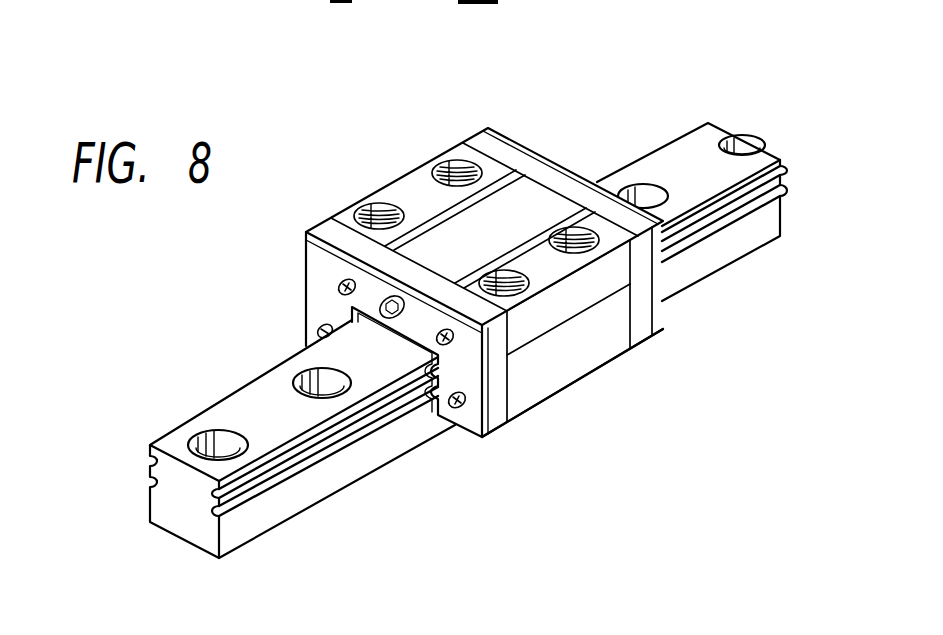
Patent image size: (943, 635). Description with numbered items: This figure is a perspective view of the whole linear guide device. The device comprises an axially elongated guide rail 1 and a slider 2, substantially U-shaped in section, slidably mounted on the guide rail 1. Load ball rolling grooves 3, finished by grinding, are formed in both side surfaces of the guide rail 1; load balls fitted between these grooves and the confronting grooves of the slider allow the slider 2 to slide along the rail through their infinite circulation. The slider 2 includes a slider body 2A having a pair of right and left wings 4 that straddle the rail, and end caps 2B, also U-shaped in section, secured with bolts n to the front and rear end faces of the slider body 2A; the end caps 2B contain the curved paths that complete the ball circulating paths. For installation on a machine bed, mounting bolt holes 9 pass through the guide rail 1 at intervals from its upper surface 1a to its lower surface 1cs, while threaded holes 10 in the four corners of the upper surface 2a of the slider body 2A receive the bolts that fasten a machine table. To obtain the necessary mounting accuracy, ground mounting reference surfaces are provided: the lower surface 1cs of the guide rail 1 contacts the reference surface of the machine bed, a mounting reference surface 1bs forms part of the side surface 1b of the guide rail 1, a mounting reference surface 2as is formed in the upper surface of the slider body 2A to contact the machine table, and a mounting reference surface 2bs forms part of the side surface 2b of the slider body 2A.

The guide rail 1 is at (158, 428).
The upper surface 1a is at (254, 400).
The side surface 1b is at (392, 407).
The mounting reference surface 1bs is at (343, 473).
The mounting reference surface 1cs is at (170, 538).
The load ball rolling grooves 3 is at (150, 460).
The mounting bolt holes 9 is at (212, 438).
The slider 2 is at (685, 2).
The slider body 2A is at (416, 183).
The end caps 2B is at (328, 230).
The top surface of carriage 2a is at (527, 197).
The mounting reference surface 2as is at (547, 247).
The side surface 2b is at (562, 373).
The mounting reference surface 2bs is at (597, 293).
The wings 4 is at (523, 413).
The threaded holes 10 is at (367, 208).
The screws n is at (320, 330).